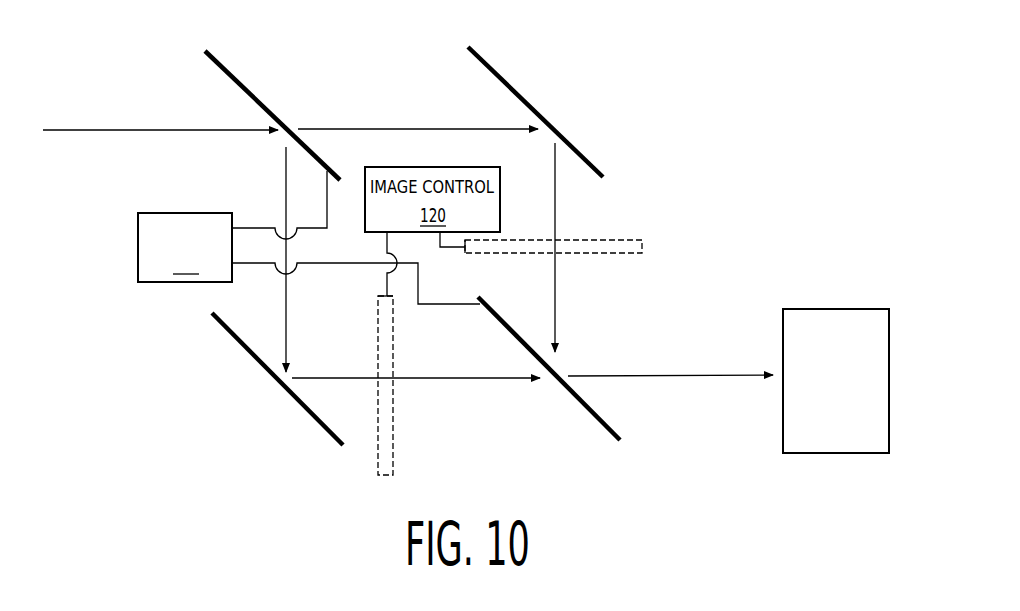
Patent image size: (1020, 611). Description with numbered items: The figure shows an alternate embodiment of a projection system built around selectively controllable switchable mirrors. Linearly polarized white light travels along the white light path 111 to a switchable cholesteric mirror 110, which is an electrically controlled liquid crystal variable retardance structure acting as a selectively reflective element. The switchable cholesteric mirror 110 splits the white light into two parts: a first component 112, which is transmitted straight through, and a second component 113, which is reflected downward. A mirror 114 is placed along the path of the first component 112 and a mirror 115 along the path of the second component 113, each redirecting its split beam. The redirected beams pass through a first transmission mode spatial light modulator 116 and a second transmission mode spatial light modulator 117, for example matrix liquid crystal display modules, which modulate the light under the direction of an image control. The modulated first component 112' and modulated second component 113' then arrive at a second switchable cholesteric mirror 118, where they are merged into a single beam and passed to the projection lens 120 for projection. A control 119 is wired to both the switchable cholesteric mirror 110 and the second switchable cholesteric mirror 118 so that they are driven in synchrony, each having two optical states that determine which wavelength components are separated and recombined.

The switchable cholesteric mirror 110 is at (320, 158).
The white light path 111 is at (187, 132).
The first component 112 is at (419, 155).
The modulated first component 112' is at (585, 247).
The second component 113 is at (318, 259).
The modulated second component 113' is at (416, 403).
The mirror 114 is at (563, 133).
The mirror 115 is at (305, 412).
The first transmission mode spatial light modulator 116 is at (627, 238).
The second transmission mode spatial light modulator 117 is at (395, 435).
The second switchable cholesteric mirror 118 is at (583, 407).
The control 119 is at (309, 237).
The projection lens 120 is at (818, 453).